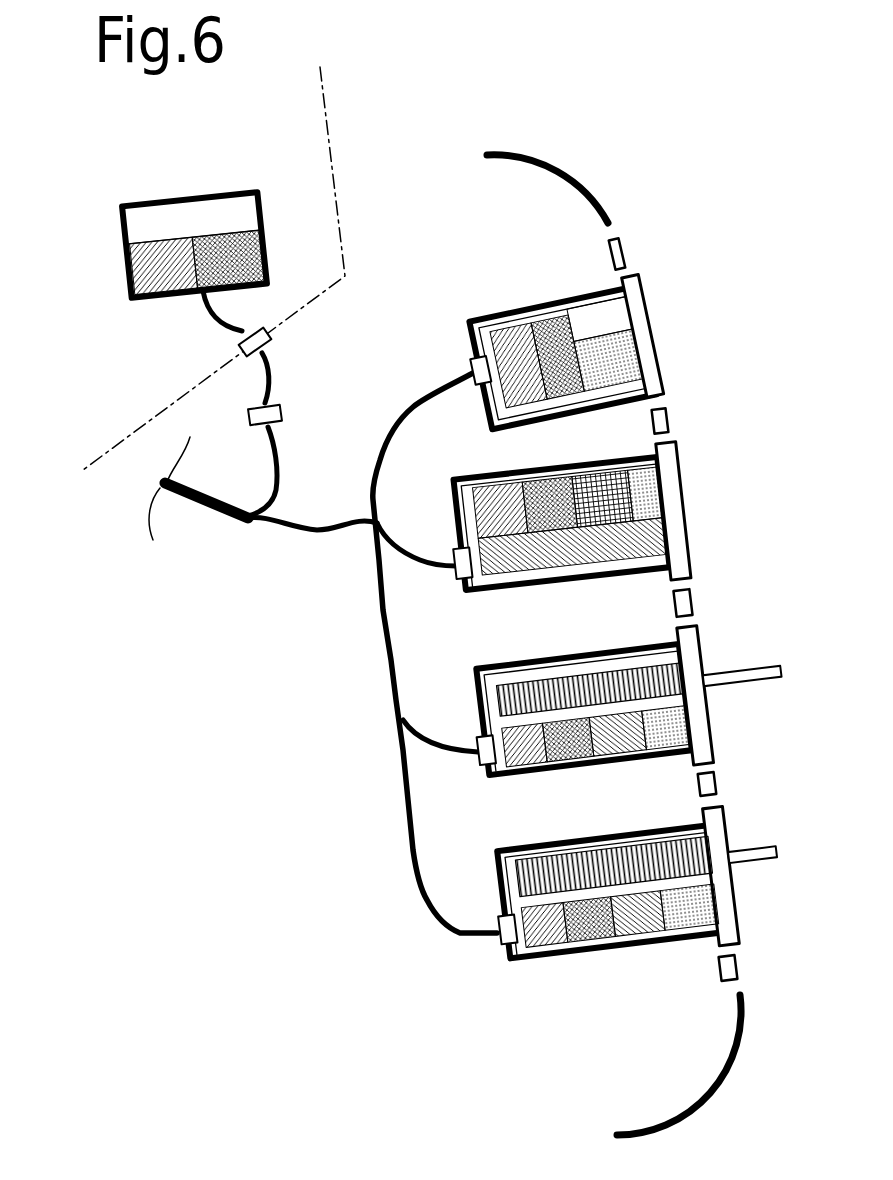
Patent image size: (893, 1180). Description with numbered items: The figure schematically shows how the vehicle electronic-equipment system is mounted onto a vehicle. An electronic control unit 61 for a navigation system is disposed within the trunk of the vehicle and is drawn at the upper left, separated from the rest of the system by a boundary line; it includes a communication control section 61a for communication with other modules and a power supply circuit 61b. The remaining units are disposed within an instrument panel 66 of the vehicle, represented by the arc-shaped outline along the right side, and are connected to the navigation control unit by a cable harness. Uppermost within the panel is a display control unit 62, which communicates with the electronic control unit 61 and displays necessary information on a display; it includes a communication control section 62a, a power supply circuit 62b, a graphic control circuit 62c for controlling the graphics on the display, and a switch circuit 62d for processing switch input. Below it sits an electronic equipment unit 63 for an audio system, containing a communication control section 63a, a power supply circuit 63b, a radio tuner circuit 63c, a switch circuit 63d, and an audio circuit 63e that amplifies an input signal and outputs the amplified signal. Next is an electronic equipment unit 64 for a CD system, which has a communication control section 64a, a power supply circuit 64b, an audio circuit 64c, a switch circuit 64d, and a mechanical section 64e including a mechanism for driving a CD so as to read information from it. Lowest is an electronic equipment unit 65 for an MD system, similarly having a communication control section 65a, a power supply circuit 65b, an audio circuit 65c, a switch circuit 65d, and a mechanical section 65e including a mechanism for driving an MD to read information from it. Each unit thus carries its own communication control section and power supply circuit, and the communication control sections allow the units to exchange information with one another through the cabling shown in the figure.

The electronic control unit 61 is at (180, 222).
The communication control section 61a is at (150, 268).
The power supply circuit 61b is at (247, 256).
The display control unit 62 is at (585, 334).
The communication control section 62a is at (508, 337).
The power supply circuit 62b is at (553, 322).
The graphic control circuit 62c is at (617, 317).
The switch circuit 62d is at (623, 352).
The electronic equipment unit 63 is at (591, 507).
The communication control section 63a is at (495, 500).
The power supply circuit 63b is at (540, 493).
The radio tuner circuit 63c is at (612, 488).
The switch circuit 63d is at (653, 502).
The audio circuit 63e is at (650, 540).
The electronic equipment unit 64 is at (619, 713).
The communication control section 64a is at (523, 753).
The power supply circuit 64b is at (570, 737).
The audio circuit 64c is at (623, 740).
The switch circuit 64d is at (667, 733).
The mechanical section 64e is at (573, 677).
The electronic equipment unit 65 is at (621, 926).
The communication control section 65a is at (550, 937).
The power supply circuit 65b is at (595, 933).
The audio circuit 65c is at (643, 917).
The switch circuit 65d is at (700, 895).
The mechanical section 65e is at (527, 882).
The instrument panel 66 is at (580, 185).